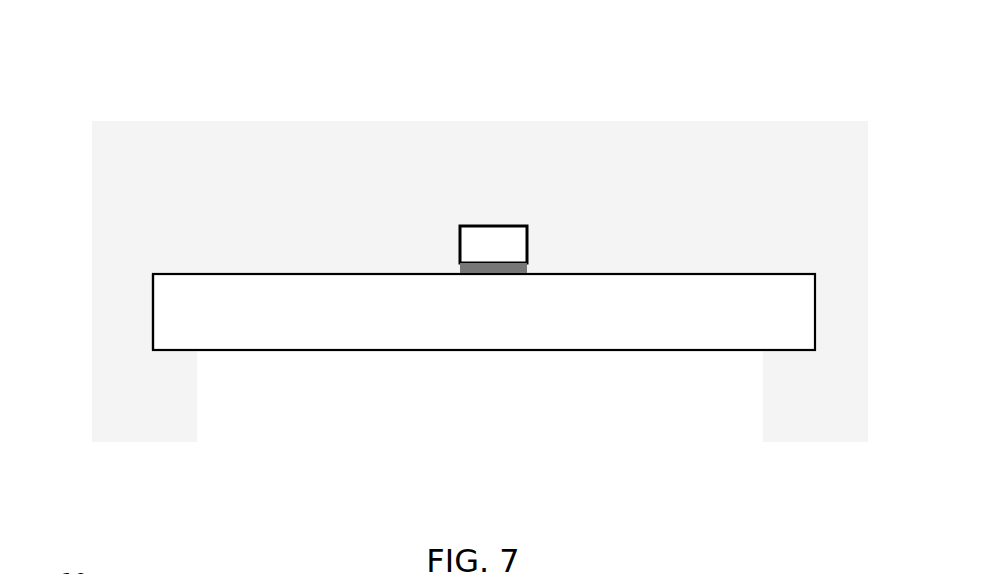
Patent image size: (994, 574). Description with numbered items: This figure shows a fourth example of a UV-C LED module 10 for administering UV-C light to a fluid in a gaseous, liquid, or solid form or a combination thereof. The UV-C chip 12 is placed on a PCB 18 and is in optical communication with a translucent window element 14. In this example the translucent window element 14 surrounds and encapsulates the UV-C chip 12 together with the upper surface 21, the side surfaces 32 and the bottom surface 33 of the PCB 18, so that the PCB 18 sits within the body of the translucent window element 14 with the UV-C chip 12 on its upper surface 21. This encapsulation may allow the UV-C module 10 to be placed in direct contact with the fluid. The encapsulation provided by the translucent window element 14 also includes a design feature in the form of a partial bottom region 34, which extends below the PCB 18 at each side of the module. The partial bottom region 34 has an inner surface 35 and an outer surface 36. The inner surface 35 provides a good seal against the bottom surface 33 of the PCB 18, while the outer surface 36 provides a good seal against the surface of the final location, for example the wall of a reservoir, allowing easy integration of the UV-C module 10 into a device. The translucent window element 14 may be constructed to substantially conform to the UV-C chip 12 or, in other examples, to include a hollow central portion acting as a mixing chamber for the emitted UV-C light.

The UV-C module 10 is at (128, 99).
The UV-C chip 12 is at (492, 250).
The translucent window element 14 is at (743, 142).
The PCB 18 is at (381, 329).
The upper surface 21 is at (162, 274).
The side surfaces 32 is at (150, 322).
The bottom surface 33 is at (638, 355).
The partial bottom region 34 is at (122, 393).
The inner surface 35 is at (178, 357).
The outer surface 36 is at (180, 445).